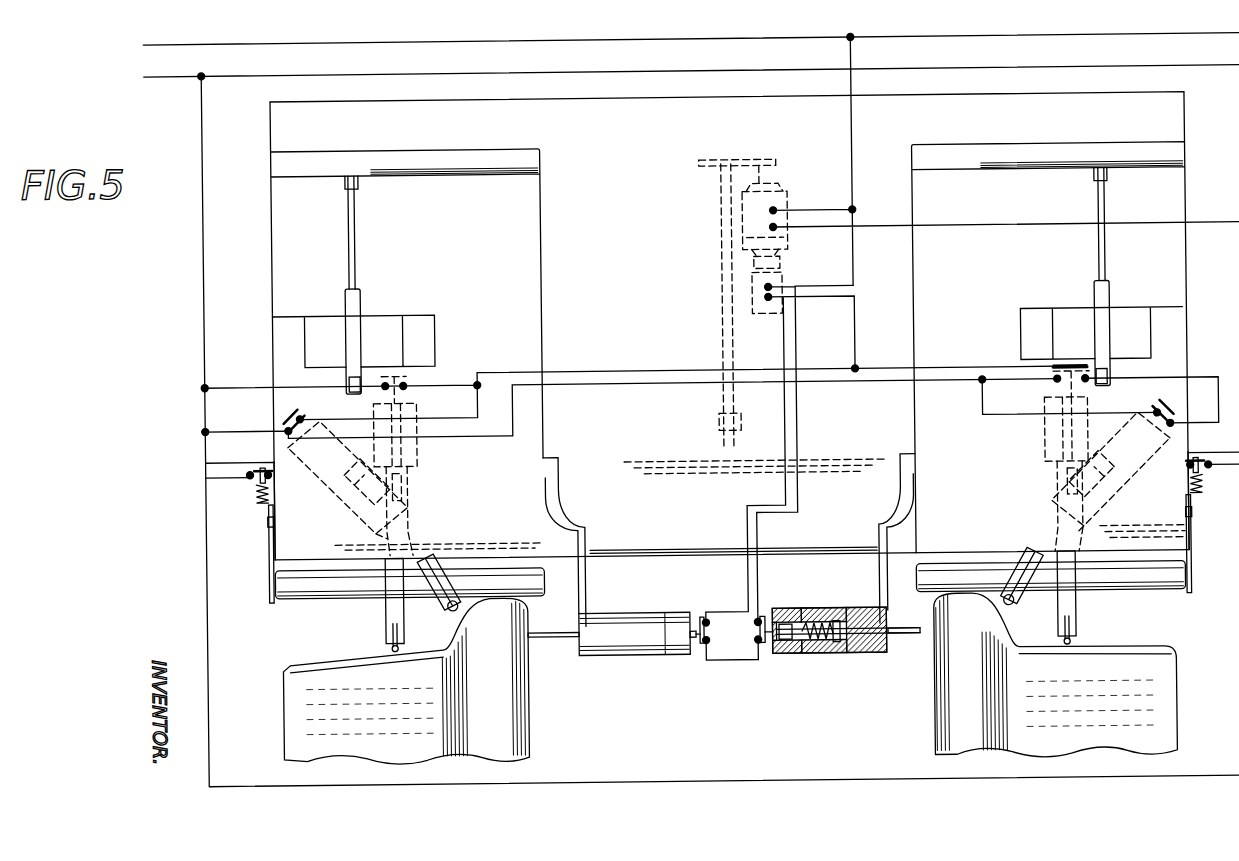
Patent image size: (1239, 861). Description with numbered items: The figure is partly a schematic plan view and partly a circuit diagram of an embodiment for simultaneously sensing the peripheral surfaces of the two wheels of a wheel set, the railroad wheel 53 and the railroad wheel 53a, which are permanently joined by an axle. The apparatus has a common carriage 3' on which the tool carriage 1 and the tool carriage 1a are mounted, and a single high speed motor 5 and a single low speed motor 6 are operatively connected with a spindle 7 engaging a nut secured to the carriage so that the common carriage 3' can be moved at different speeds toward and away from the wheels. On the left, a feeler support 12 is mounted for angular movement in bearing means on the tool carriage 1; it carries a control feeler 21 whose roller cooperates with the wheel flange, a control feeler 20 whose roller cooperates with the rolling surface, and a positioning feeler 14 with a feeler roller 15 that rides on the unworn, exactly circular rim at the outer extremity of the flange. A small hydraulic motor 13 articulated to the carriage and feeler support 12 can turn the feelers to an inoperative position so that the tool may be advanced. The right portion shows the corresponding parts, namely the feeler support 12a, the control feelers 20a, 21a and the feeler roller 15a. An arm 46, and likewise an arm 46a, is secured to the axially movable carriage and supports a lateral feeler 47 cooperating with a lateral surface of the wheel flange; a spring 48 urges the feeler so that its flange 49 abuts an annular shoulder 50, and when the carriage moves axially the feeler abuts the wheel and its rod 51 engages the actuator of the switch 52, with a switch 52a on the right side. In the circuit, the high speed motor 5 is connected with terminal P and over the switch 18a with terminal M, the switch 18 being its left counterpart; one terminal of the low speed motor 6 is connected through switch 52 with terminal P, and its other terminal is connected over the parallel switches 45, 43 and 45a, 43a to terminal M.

The tool carriage 1 is at (528, 230).
The tool carriage 1a is at (1170, 278).
The common carriage 3' is at (745, 121).
The high speed motor 5 is at (718, 222).
The low speed motor 6 is at (745, 298).
The spindle 7 is at (718, 343).
The feeler support 12 is at (282, 548).
The feeler support 12a is at (1169, 544).
The hydraulic motor 13 is at (360, 306).
The positioning feeler 14 is at (264, 596).
The feeler roller 15 is at (296, 600).
The feeler roller 15a is at (1172, 592).
The switch 18 is at (248, 498).
The switch 18a is at (1200, 493).
The control feeler 20 is at (378, 626).
The control feeler 20a is at (1073, 622).
The control feeler 21 is at (438, 558).
The control feeler 21a is at (1012, 589).
The switch 43 is at (278, 418).
The switch 43a is at (1171, 413).
The switch 45 is at (402, 381).
The switch 45a is at (1046, 376).
The arm 46 is at (634, 660).
The arm 46a is at (853, 660).
The lateral feeler 47 is at (552, 641).
The spring 48 is at (801, 620).
The flange 49 is at (826, 624).
The annular shoulder 50 is at (846, 616).
The rod 51 is at (798, 652).
The switch 52 is at (699, 618).
The switch 52a is at (762, 650).
The railroad wheel 53 is at (520, 709).
The railroad wheel 53a is at (1153, 744).